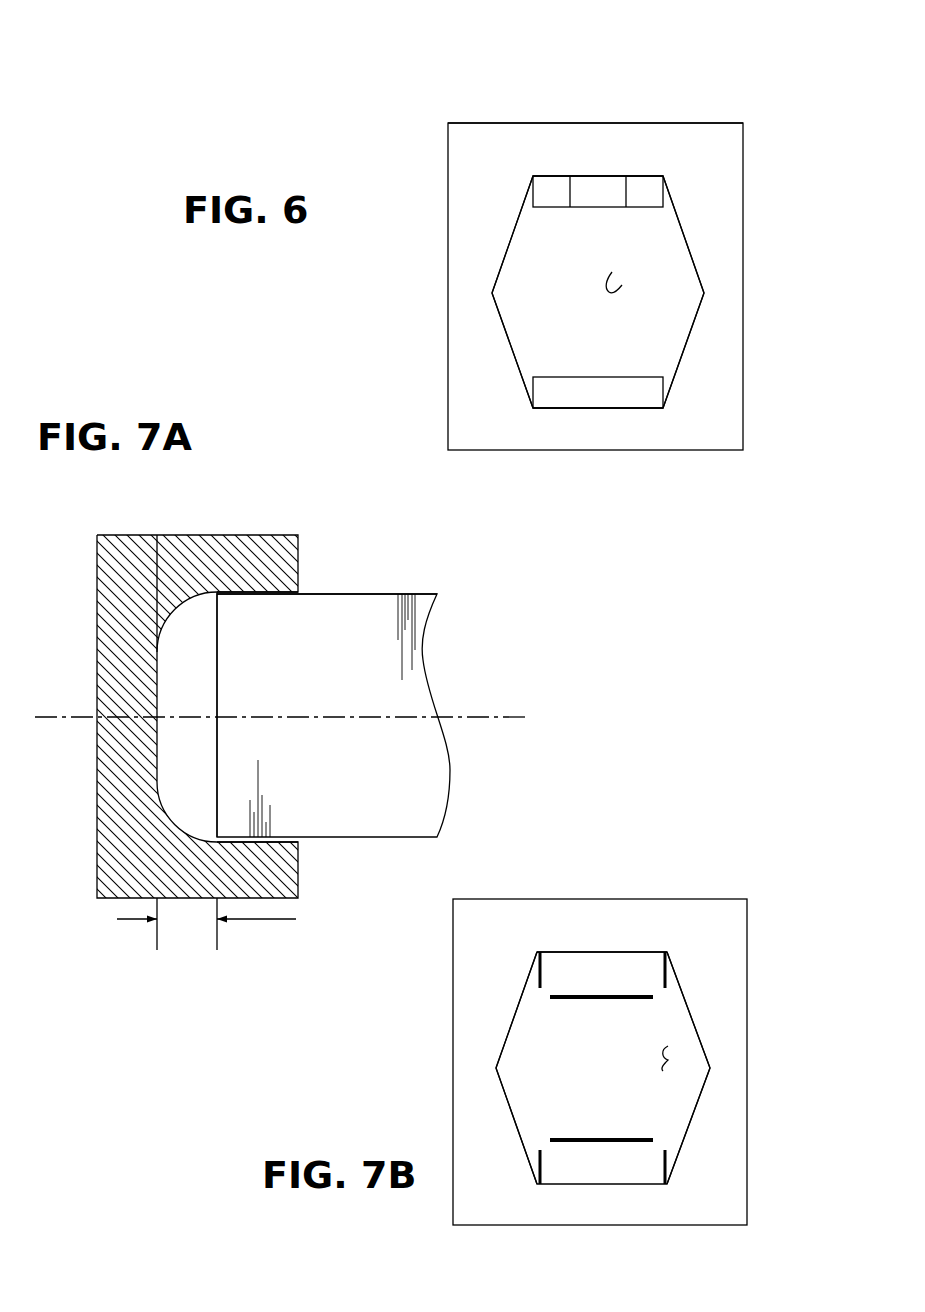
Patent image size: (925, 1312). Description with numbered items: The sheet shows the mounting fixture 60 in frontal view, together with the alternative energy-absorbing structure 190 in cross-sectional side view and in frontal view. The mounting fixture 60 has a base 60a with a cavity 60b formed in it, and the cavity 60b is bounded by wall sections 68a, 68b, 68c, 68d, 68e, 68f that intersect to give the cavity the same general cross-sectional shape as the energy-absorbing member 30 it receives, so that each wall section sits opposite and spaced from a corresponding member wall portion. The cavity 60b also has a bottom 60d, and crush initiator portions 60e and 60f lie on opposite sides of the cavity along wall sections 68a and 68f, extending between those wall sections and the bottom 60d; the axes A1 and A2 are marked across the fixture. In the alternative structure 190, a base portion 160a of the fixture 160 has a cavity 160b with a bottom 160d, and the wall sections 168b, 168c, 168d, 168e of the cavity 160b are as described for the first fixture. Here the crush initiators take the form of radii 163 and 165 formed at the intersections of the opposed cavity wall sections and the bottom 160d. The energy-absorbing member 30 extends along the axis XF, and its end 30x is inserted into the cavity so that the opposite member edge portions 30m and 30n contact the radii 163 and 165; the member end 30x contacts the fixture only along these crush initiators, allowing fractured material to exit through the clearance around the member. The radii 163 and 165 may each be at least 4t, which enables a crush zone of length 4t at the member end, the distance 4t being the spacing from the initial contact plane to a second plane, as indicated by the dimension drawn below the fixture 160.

In FIG. 6, the mounting fixture 60 is at (448, 213).
In FIG. 6, the base 60a is at (552, 150).
In FIG. 6, the cavity 60b is at (650, 325).
In FIG. 6, the bottom 60d is at (614, 278).
In FIG. 6, the crush initiator portion 60e is at (598, 190).
In FIG. 6, the crush initiator portion 60f is at (633, 397).
In FIG. 6, the cavity wall section 68a is at (663, 176).
In FIG. 6, the cavity wall section 68b is at (520, 207).
In FIG. 6, the cavity wall section 68c is at (695, 262).
In FIG. 6, the cavity wall section 68d is at (510, 350).
In FIG. 6, the cavity wall section 68e is at (688, 348).
In FIG. 6, the cavity wall section 68f is at (578, 410).
In FIG. 6, the first axis A1 is at (577, 177).
In FIG. 6, the second axis A2 is at (628, 192).
In FIG. 6, the energy-absorbing structure 190 is at (382, 313).
In FIG. 7A, the energy-absorbing structure 190 is at (529, 593).
In FIG. 7B, the energy-absorbing structure 190 is at (387, 1040).
In FIG. 7A, the flanged body 160 is at (97, 535).
In FIG. 7B, the flanged body 160 is at (703, 918).
In FIG. 7B, the mounting fixture base portion 160a is at (687, 1005).
In FIG. 7A, the cavity 160b is at (267, 588).
In FIG. 7B, the cavity 160b is at (653, 1105).
In FIG. 7A, the bottom 160d is at (157, 703).
In FIG. 7B, the bottom 160d is at (668, 1060).
In FIG. 7A, the radius 163 is at (172, 613).
In FIG. 7B, the radius 163 is at (603, 968).
In FIG. 7A, the radius 165 is at (173, 823).
In FIG. 7B, the radius 165 is at (602, 1163).
In FIG. 7B, the wall section 168b is at (515, 1013).
In FIG. 7B, the wall section 168c is at (680, 987).
In FIG. 7B, the wall section 168d is at (508, 1108).
In FIG. 7B, the wall section 168e is at (690, 1122).
In FIG. 7A, the energy-absorbing member 30 is at (392, 670).
In FIG. 7A, the member edge portion 30m is at (213, 590).
In FIG. 7A, the member edge portion 30n is at (213, 843).
In FIG. 7A, the member end 30x is at (298, 592).
In FIG. 7A, the crush zone length 4t is at (267, 920).
In FIG. 7A, the axis XF, X XF is at (472, 718).